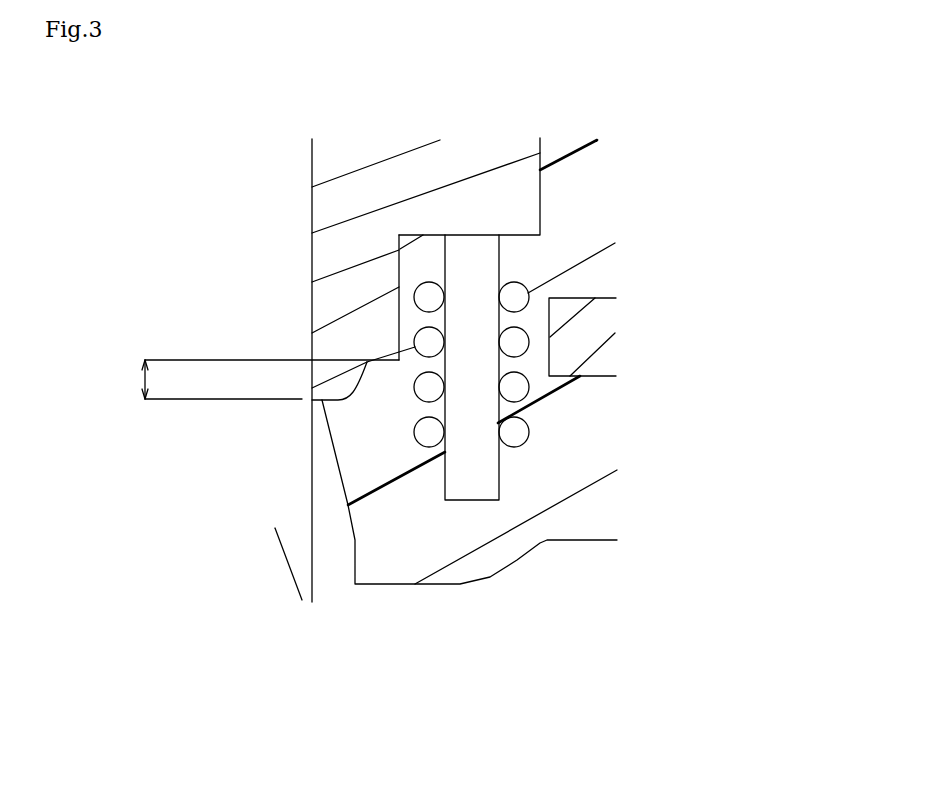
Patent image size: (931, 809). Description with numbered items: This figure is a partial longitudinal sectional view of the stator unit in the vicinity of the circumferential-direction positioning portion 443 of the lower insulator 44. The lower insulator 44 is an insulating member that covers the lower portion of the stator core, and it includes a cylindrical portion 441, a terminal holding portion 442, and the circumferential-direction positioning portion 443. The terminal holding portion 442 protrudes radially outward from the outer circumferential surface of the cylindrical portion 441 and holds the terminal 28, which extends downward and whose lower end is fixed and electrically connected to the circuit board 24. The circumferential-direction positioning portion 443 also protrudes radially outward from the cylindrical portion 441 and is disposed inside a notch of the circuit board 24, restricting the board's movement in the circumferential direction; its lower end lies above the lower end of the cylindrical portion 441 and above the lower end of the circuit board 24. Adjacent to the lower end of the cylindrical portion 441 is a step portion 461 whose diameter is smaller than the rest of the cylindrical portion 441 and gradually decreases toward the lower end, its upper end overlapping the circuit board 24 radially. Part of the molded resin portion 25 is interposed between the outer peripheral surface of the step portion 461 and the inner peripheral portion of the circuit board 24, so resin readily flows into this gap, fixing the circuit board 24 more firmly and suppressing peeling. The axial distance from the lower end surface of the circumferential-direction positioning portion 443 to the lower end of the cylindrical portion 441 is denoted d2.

The lower insulator 44 is at (323, 163).
The cylindrical portion 441 is at (327, 382).
The terminal holding portion 442 is at (488, 195).
The circumferential-direction positioning portion 443 is at (380, 340).
The circuit board 24 is at (588, 345).
The molded resin portion 25 is at (572, 515).
The terminal 28 is at (473, 480).
The step portion 461 is at (367, 379).
The distance d2 is at (252, 379).